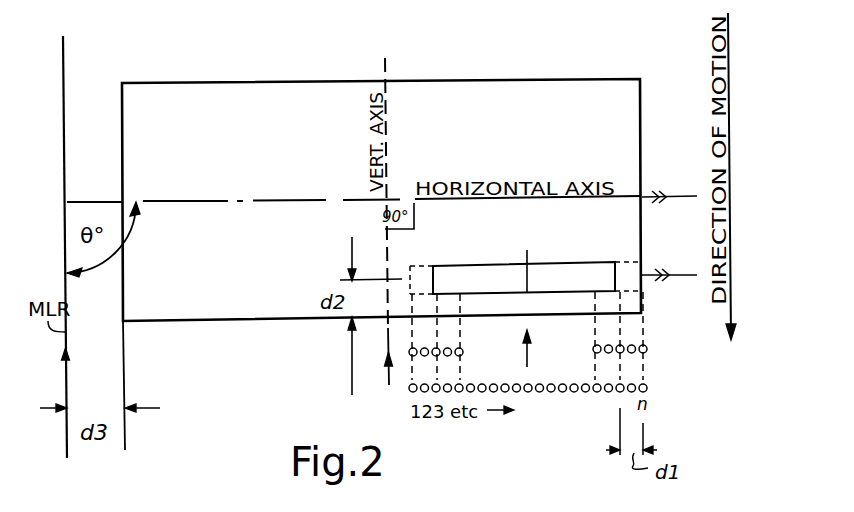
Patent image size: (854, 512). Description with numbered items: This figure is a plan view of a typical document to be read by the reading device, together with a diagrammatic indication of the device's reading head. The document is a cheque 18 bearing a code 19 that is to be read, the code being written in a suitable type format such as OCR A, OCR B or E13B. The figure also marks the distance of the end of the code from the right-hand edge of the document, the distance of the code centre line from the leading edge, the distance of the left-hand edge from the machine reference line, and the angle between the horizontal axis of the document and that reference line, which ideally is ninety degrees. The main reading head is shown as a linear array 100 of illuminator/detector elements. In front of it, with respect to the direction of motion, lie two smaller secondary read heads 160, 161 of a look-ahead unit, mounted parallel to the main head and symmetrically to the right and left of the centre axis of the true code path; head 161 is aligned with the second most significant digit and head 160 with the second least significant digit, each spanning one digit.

The cheque 18 is at (612, 95).
The code 19 is at (553, 264).
The secondary read head 161 is at (463, 352).
The secondary read head 160 is at (647, 348).
The linear array 100 is at (648, 387).